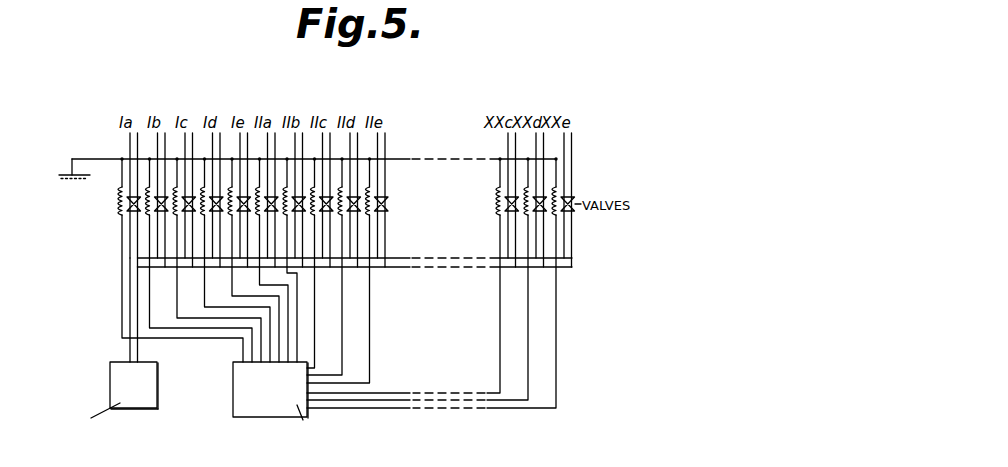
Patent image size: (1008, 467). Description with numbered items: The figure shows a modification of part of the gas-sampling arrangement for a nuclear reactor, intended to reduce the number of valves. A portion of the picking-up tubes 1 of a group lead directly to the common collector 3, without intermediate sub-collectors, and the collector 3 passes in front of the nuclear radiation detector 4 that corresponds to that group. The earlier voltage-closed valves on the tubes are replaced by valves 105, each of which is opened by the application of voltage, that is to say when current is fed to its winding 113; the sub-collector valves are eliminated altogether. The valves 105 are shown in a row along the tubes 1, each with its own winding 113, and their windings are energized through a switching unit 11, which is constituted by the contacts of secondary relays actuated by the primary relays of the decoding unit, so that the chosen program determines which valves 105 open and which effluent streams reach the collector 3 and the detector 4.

The picking-up tubes 1 is at (158, 148).
The winding 113 is at (119, 204).
The valves 105 is at (136, 208).
The collector 3 is at (130, 293).
The nuclear radiation detector 4 is at (122, 383).
The switch or selection unit 11 is at (278, 405).